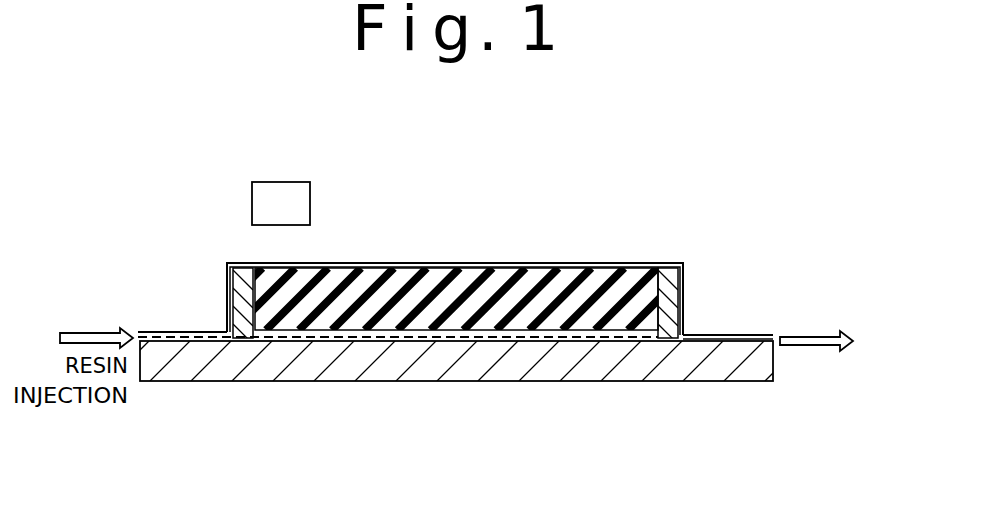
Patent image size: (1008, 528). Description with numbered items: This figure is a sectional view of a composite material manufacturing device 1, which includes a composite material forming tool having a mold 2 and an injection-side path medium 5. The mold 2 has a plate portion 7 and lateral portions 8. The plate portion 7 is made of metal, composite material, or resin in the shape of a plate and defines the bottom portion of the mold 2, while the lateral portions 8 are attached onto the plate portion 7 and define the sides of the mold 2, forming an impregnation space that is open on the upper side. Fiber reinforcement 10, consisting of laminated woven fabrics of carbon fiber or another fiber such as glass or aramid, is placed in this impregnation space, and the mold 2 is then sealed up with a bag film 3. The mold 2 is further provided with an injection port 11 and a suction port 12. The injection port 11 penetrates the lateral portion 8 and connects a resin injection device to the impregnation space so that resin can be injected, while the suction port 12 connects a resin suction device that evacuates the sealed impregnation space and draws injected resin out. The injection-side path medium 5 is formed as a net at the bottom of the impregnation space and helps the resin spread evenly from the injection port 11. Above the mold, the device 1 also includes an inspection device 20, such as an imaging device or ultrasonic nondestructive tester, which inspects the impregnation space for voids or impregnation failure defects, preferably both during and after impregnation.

The composite material manufacturing device 1 is at (778, 191).
The mold 2 is at (658, 395).
The bag film 3 is at (368, 263).
The injection-side path medium 5 is at (280, 337).
The plate portion 7 is at (472, 362).
The lateral portions 8 is at (243, 295).
The fiber reinforcement 10 is at (400, 282).
The injection port 11 is at (165, 332).
The suction port 12 is at (737, 334).
The inspection device 20 is at (281, 182).